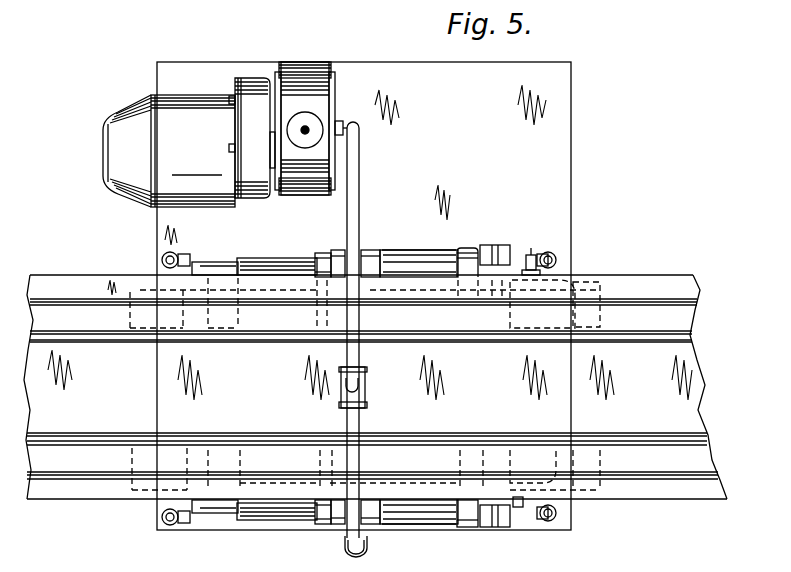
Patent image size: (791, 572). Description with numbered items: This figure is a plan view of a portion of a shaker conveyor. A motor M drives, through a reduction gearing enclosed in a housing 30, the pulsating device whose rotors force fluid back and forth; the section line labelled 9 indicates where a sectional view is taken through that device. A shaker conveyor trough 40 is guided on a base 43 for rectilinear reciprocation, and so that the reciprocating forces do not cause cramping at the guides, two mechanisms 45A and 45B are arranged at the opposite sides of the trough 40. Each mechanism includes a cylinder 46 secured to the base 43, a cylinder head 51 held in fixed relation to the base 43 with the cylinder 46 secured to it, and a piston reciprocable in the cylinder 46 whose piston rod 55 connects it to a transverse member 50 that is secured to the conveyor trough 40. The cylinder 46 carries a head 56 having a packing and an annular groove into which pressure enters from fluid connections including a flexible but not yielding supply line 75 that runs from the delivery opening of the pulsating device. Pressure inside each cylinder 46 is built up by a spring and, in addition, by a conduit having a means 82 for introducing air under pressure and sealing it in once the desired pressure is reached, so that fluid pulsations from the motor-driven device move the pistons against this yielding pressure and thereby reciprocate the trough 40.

The motor M is at (170, 113).
The housing 30 is at (253, 82).
The section line 9- 9 is at (320, 45).
The base 43 is at (549, 158).
The shaker conveyor trough 40 is at (670, 363).
The supply line 75 is at (357, 182).
The transverse member 50 is at (225, 263).
The piston rod 55 is at (277, 265).
The head 56 is at (323, 253).
The mechanism 45A is at (402, 257).
The mechanism 45B is at (427, 517).
The cylinder 46 is at (432, 255).
The cylinder head 51 is at (467, 250).
The means for the introduction of air under pressure 82 is at (530, 253).